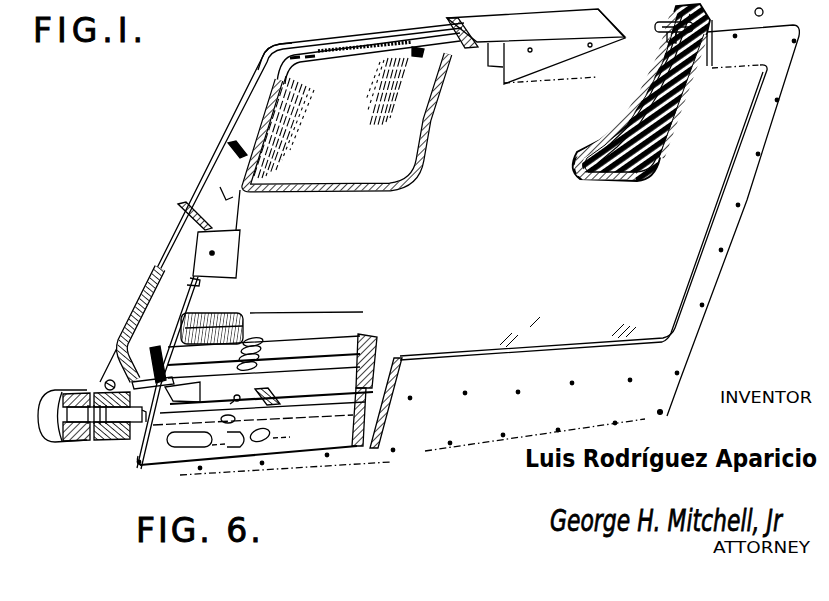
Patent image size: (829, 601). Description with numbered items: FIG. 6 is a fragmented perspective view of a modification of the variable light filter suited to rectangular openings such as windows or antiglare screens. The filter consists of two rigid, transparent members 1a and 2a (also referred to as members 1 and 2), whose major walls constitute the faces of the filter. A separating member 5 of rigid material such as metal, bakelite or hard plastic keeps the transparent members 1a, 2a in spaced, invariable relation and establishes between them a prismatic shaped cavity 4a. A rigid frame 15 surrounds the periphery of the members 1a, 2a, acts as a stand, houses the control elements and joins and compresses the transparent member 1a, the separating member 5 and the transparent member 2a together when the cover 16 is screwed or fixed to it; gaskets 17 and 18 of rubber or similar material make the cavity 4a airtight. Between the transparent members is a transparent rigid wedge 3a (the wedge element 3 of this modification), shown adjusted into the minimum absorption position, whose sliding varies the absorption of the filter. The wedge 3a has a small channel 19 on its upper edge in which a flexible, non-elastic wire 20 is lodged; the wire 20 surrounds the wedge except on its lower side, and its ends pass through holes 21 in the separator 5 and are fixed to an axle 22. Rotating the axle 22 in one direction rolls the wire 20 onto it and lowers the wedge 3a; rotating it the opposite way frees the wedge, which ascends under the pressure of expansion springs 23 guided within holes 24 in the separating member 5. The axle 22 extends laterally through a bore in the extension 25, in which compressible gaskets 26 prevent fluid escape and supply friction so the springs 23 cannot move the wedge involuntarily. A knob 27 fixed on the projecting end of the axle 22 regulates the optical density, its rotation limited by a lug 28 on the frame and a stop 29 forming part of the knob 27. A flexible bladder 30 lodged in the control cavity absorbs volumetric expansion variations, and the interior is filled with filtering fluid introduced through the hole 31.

The transparent member 1 is at (630, 138).
The transparent member 1a is at (506, 236).
The transparent member 2 is at (640, 115).
The transparent member 2a is at (297, 47).
The outer sealing layer 3 is at (652, 88).
The transparent wedge 3a is at (385, 65).
The prismatic shaped cavity 4a is at (303, 347).
The separating member 5 is at (437, 48).
The rigid frame 15 is at (173, 237).
The cover 16 is at (648, 427).
The gasket 17 is at (359, 447).
The gasket 18 is at (677, 22).
The small channel 19 is at (353, 49).
The wire 20 is at (268, 78).
The holes 21 is at (153, 350).
The axle 22 is at (207, 408).
The expansion springs 23 is at (229, 423).
The holes 24 is at (260, 368).
The extension 25 is at (72, 443).
The gaskets 26 is at (87, 443).
The knob 27 is at (51, 394).
The lug 28 is at (125, 372).
The stop 29 is at (106, 384).
The bladder 30 is at (297, 432).
The hole 31 is at (764, 10).